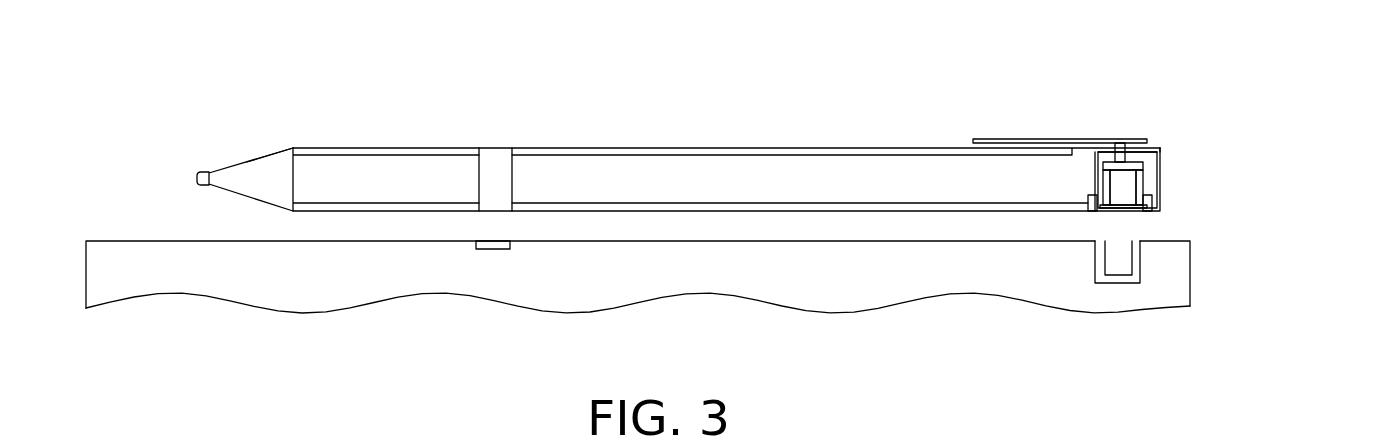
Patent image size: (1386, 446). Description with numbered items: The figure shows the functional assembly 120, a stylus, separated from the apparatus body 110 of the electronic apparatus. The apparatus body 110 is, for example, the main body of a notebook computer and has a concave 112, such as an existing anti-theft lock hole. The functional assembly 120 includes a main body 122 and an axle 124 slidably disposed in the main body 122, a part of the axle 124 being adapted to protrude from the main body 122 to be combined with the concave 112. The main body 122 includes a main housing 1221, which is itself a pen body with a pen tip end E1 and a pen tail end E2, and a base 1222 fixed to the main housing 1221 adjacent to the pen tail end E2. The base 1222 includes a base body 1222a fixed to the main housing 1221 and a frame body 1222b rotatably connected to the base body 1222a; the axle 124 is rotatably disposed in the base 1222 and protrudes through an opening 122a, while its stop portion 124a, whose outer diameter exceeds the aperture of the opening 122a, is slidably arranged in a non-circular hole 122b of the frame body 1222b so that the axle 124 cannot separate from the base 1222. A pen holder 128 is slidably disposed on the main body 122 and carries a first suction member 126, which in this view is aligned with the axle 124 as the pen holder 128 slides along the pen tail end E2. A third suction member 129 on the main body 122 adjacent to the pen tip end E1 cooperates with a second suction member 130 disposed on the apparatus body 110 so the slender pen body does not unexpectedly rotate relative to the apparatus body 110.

The apparatus body 110 is at (937, 277).
The concave 112 is at (1135, 262).
The functional assembly 120 is at (687, 124).
The main body 122 is at (1178, 142).
The main housing 1221 is at (1161, 165).
The base 1222 is at (1154, 127).
The base body 1222a is at (1143, 200).
The frame body 1222b is at (1093, 190).
The opening 122a is at (1120, 212).
The non-circular hole 122b is at (1140, 148).
The axle 124 is at (1090, 177).
The stop portion 124a is at (1125, 181).
The first suction member 126 is at (1117, 157).
The pen holder 128 is at (980, 138).
The third suction member 129 is at (493, 168).
The second suction member 130 is at (493, 248).
The pen tip end E1 is at (239, 152).
The pen tail end E2 is at (1169, 144).